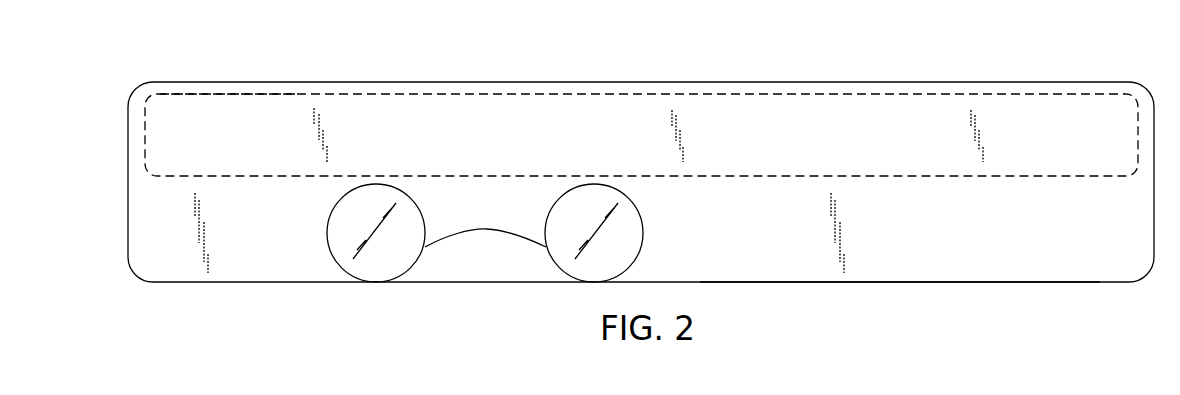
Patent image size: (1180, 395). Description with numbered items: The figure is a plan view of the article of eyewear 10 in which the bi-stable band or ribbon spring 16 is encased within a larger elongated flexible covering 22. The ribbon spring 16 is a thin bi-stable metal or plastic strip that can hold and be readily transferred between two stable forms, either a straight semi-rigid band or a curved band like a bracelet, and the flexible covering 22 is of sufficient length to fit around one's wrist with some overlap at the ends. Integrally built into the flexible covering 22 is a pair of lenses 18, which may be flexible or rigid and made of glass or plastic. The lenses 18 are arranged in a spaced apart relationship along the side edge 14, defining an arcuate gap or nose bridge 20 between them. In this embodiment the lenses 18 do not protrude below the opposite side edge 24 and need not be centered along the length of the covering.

The article of eyewear 10 is at (887, 58).
The side edge 14 is at (1048, 96).
The bi-stable ribbon spring 16 is at (214, 104).
The lenses 18 is at (397, 281).
The nose bridge 20 is at (507, 236).
The flexible covering 22 is at (137, 218).
The side edge 24 is at (945, 283).